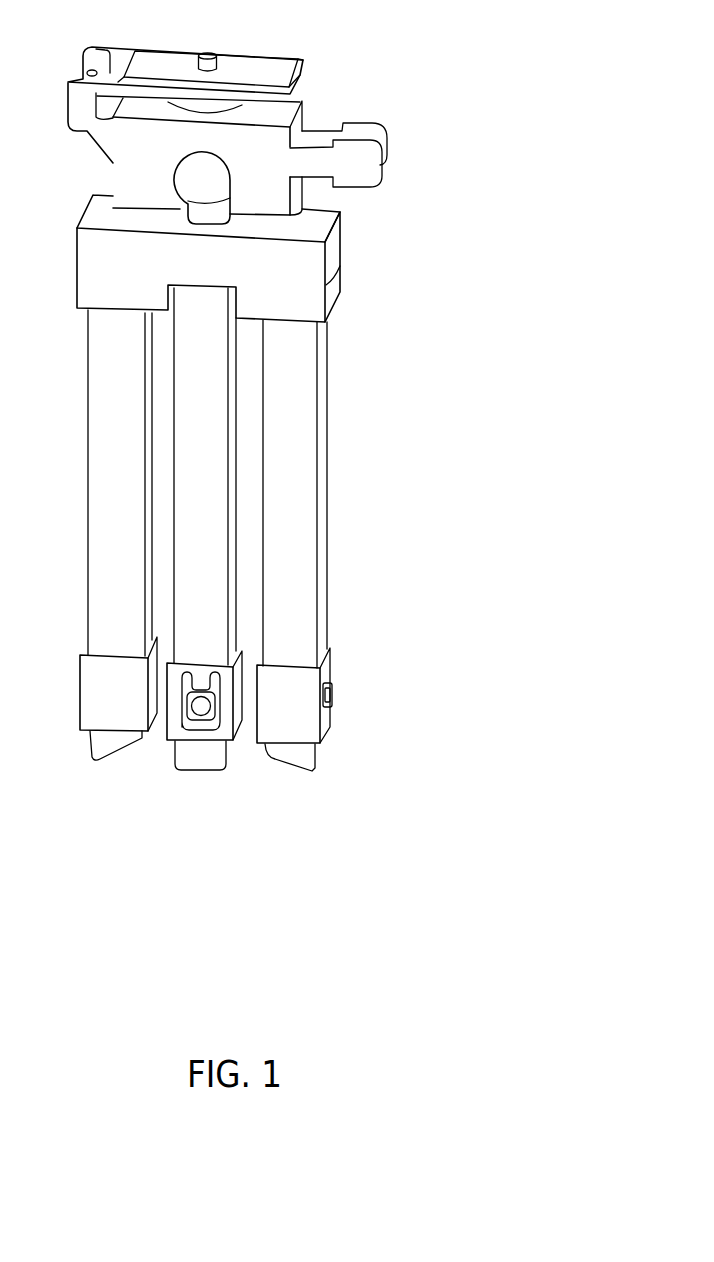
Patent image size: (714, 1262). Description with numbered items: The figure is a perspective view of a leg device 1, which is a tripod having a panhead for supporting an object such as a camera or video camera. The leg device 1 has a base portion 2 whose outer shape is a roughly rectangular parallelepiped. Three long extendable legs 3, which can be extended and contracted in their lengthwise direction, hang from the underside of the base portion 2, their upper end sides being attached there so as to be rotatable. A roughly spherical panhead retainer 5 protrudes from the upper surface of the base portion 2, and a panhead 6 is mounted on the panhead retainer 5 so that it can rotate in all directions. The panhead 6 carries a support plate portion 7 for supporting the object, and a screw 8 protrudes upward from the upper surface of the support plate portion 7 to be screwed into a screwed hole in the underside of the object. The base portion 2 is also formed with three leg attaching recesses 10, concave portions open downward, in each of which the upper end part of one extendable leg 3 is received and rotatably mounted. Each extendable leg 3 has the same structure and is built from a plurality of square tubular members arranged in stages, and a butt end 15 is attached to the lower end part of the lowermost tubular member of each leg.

The leg device 1 is at (347, 61).
The base portion 2 is at (352, 237).
The extendable leg 3 is at (77, 580).
The panhead retainer 5 is at (188, 184).
The panhead 6 is at (177, 45).
The support plate portion 7 is at (248, 63).
The screw 8 is at (208, 54).
The leg attaching recess 10 is at (331, 292).
The butt end 15 is at (97, 757).